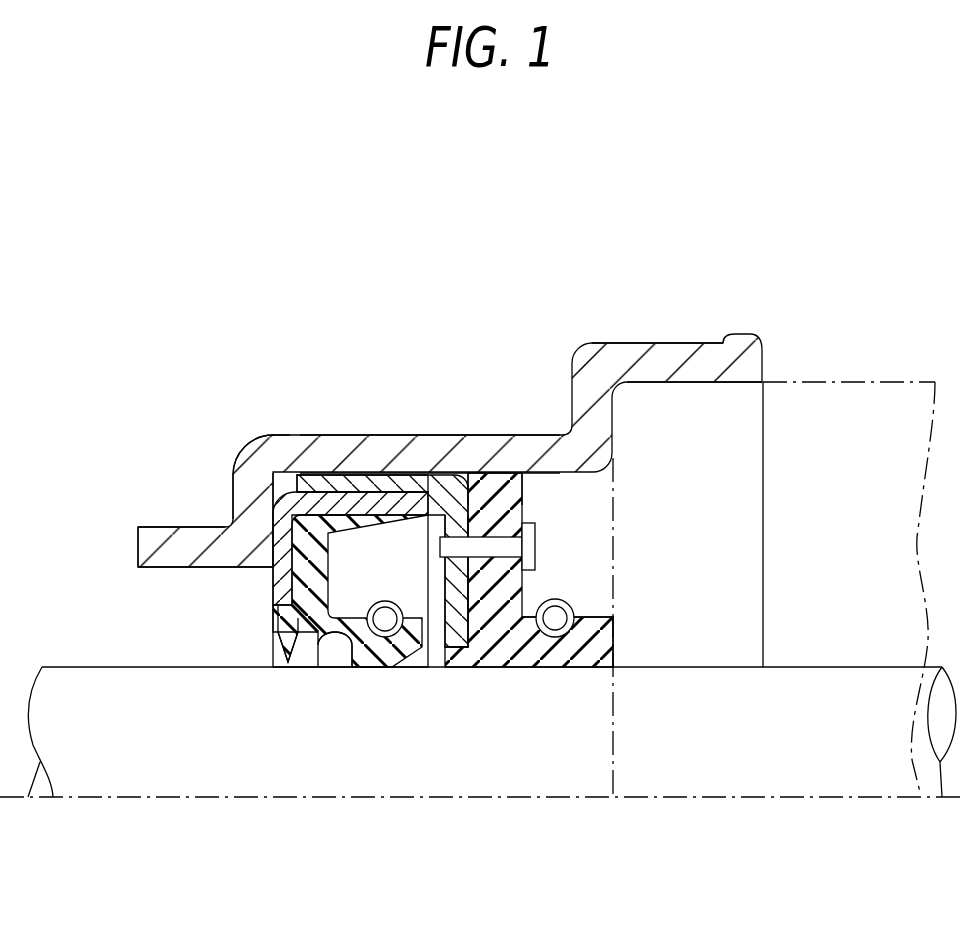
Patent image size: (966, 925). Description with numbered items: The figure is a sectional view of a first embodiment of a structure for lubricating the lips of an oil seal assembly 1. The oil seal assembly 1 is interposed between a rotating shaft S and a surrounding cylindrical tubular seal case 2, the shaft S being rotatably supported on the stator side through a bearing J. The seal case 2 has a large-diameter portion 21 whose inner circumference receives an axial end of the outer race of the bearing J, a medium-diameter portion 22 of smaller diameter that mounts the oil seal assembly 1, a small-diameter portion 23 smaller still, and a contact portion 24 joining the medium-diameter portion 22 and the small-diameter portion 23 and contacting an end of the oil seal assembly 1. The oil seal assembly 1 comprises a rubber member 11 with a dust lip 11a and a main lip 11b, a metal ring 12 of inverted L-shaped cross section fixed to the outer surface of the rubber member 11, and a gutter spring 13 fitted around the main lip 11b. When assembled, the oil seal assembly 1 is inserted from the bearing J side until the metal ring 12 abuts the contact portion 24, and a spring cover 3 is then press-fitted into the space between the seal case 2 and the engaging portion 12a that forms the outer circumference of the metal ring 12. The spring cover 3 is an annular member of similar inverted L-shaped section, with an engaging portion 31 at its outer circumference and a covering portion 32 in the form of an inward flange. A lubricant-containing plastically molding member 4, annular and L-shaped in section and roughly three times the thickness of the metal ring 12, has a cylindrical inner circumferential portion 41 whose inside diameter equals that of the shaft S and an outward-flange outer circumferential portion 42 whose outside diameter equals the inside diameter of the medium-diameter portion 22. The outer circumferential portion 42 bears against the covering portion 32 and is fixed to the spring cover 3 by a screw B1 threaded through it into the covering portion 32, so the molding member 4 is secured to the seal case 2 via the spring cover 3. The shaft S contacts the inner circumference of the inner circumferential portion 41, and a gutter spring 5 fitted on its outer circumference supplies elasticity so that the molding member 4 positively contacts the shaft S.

The oil seal assembly 1 is at (269, 607).
The seal case 2 is at (483, 436).
The spring cover 3 is at (403, 471).
The plastically molding member 4 is at (593, 667).
The gutter spring 5 is at (562, 643).
The rubber member 11 is at (300, 562).
The dust lip 11a is at (300, 640).
The main lip 11b is at (373, 640).
The metal ring 12 is at (284, 492).
The engaging portion 12a is at (310, 490).
The gutter spring 13 is at (393, 650).
The large-diameter portion 21 is at (690, 368).
The medium-diameter portion 22 is at (433, 450).
The small-diameter portion 23 is at (162, 556).
The contact portion 24 is at (247, 485).
The engaging portion 31 is at (373, 490).
The covering portion 32 is at (457, 627).
The inner circumferential portion 41 is at (547, 657).
The outer circumferential portion 42 is at (487, 492).
The screw B1 is at (535, 525).
The bearing J is at (843, 383).
The shaft S is at (85, 785).